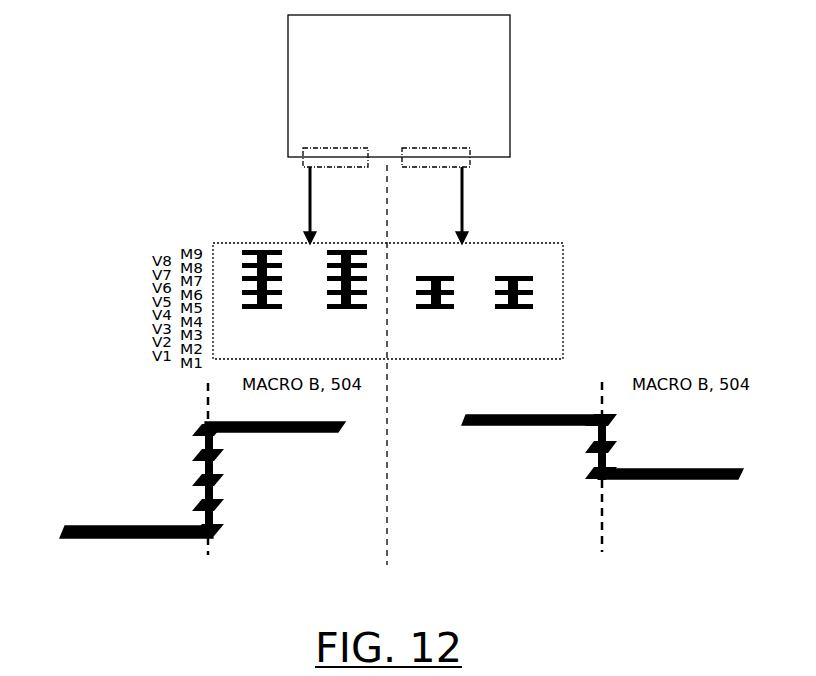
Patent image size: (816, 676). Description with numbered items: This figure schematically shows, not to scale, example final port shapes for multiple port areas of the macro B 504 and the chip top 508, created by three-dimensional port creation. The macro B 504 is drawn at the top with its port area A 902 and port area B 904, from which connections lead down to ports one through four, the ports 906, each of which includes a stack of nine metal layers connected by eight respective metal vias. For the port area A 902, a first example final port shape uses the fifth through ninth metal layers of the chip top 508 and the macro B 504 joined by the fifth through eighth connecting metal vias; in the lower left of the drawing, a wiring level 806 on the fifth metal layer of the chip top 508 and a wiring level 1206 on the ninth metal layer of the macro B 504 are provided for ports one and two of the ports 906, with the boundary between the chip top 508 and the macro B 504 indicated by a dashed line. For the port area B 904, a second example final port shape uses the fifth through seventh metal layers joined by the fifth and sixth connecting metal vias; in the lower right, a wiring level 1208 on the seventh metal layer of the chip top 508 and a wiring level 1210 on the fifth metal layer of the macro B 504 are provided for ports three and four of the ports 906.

The macro B 504 is at (375, 94).
The port area A 902 is at (335, 147).
The port area B 904 is at (437, 147).
The ports 906 is at (385, 283).
The chip top 508 is at (227, 385).
The wiring level 1206 is at (250, 422).
The wiring level 1208 is at (488, 415).
The wiring level 1210 is at (642, 470).
The M5 wire 806 is at (90, 527).